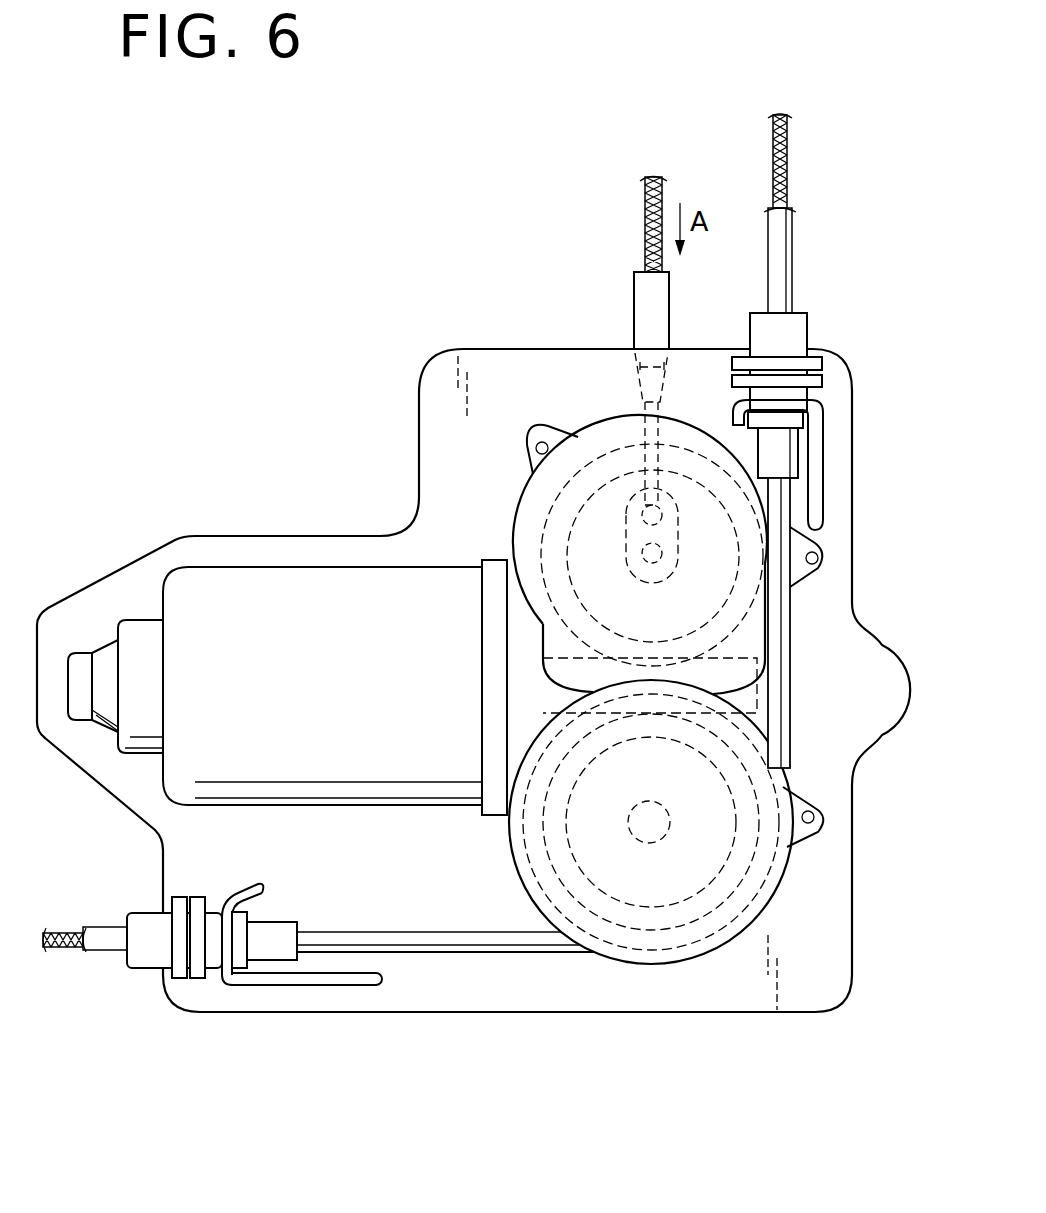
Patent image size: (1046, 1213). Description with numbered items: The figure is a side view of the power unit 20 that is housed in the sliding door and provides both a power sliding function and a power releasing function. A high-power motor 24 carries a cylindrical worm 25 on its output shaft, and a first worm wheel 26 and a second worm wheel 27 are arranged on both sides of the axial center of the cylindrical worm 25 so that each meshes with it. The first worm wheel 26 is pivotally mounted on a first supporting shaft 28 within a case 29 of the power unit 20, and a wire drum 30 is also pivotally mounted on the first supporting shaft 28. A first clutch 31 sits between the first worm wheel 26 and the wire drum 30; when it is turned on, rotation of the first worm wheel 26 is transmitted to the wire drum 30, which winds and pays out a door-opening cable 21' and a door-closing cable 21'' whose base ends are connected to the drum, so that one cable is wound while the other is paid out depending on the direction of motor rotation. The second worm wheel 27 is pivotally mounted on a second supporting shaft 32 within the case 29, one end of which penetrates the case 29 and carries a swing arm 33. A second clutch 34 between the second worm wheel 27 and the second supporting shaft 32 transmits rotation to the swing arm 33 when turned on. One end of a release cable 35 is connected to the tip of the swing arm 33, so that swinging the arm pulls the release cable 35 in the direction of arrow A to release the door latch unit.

The power unit 20 is at (288, 332).
The door-opening cable 21' is at (318, 967).
The door-closing cable 21'' is at (758, 308).
The motor 24 is at (215, 567).
The cylindrical worm 25 is at (772, 677).
The first worm wheel 26 is at (687, 925).
The second worm wheel 27 is at (542, 547).
The first supporting shaft 28 is at (628, 818).
The case 29 is at (575, 440).
The wire drum 30 is at (620, 950).
The first clutch 31 is at (578, 870).
The second supporting shaft 32 is at (642, 567).
The swing arm 33 is at (643, 511).
The second clutch 34 is at (640, 562).
The release cable 35 is at (645, 200).